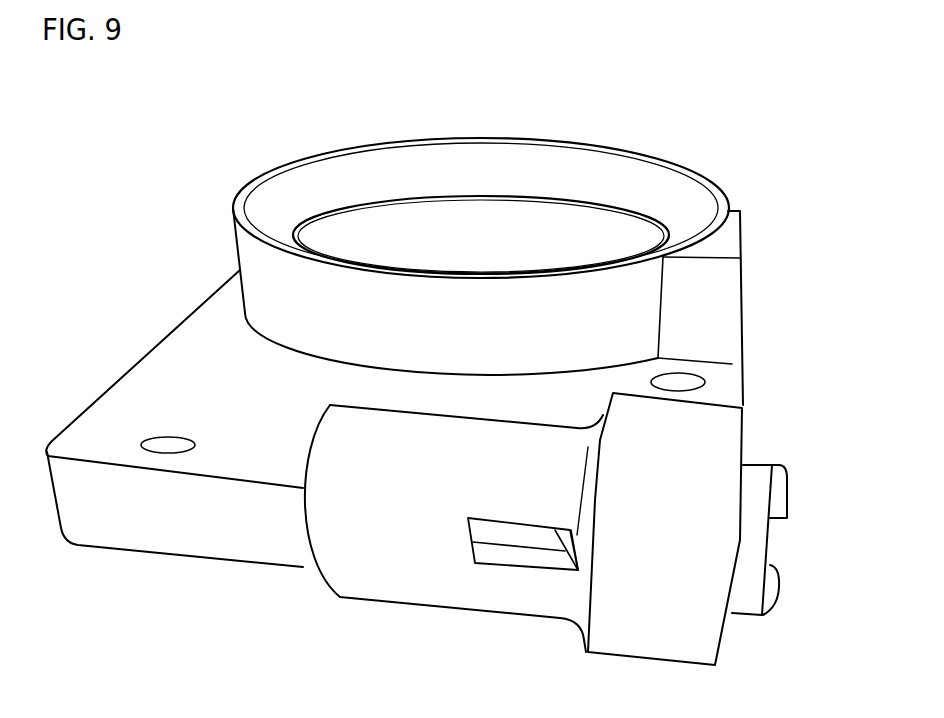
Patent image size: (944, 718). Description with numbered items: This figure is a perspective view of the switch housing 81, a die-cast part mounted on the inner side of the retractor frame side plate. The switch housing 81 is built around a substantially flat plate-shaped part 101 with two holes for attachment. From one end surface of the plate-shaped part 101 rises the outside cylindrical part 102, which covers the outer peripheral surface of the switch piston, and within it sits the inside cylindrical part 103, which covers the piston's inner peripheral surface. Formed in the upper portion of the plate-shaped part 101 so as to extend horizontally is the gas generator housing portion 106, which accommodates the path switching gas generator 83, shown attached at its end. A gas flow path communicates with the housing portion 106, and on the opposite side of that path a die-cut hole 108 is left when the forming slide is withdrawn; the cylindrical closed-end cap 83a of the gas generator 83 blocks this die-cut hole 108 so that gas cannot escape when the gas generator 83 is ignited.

The switch housing 81 is at (125, 550).
The substantially flat plate-shaped part 101 is at (130, 393).
The outside cylindrical part 102 is at (292, 187).
The inside cylindrical part 103 is at (588, 227).
The gas generator housing portion 106 is at (338, 570).
The path switching gas generator 83 is at (766, 543).
The cap 83a is at (488, 535).
The die-cut hole 108 is at (548, 542).